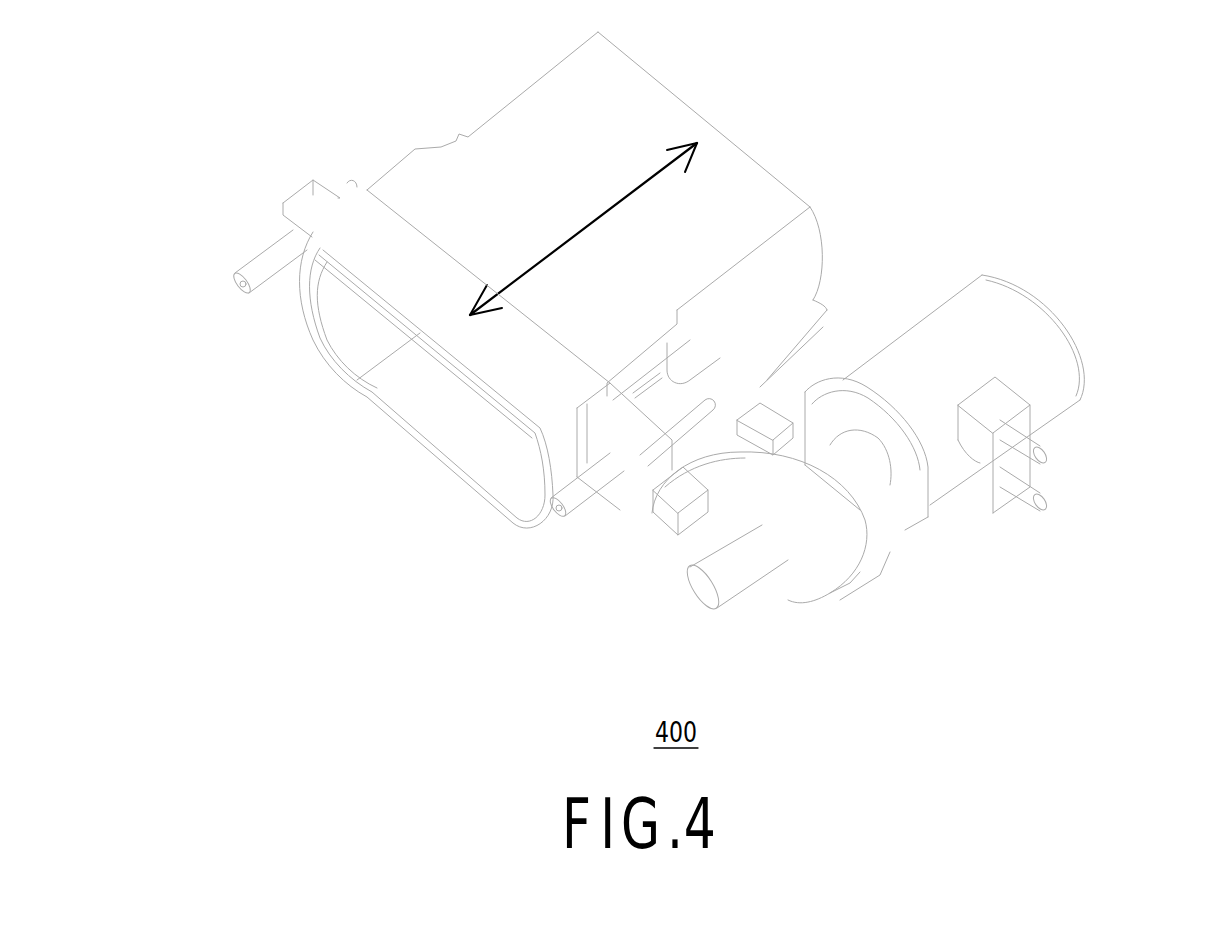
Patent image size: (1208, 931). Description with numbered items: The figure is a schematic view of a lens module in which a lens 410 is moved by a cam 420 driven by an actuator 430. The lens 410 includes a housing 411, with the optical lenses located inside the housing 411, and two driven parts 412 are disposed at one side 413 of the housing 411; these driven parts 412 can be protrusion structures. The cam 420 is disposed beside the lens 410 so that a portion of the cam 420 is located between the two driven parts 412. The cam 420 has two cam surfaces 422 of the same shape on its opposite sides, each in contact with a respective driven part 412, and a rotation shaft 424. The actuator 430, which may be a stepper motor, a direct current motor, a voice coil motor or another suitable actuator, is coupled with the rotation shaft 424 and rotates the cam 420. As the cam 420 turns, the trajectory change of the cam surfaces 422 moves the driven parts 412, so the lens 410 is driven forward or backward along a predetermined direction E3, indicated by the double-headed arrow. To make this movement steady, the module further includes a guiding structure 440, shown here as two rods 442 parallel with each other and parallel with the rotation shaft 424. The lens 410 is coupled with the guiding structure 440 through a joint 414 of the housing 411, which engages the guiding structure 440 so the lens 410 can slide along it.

The lens 410 is at (762, 133).
The housing 411 is at (673, 110).
The driven parts 412 is at (680, 493).
The side of the housing 413 is at (803, 268).
The joint 414 is at (308, 200).
The cam 420 is at (823, 593).
The cam surfaces 422 is at (768, 605).
The rotation shaft 424 is at (857, 480).
The actuator 430 is at (1052, 362).
The guiding structure 440 is at (428, 630).
The rods 442 is at (238, 287).
The predetermined direction E3 is at (583, 230).